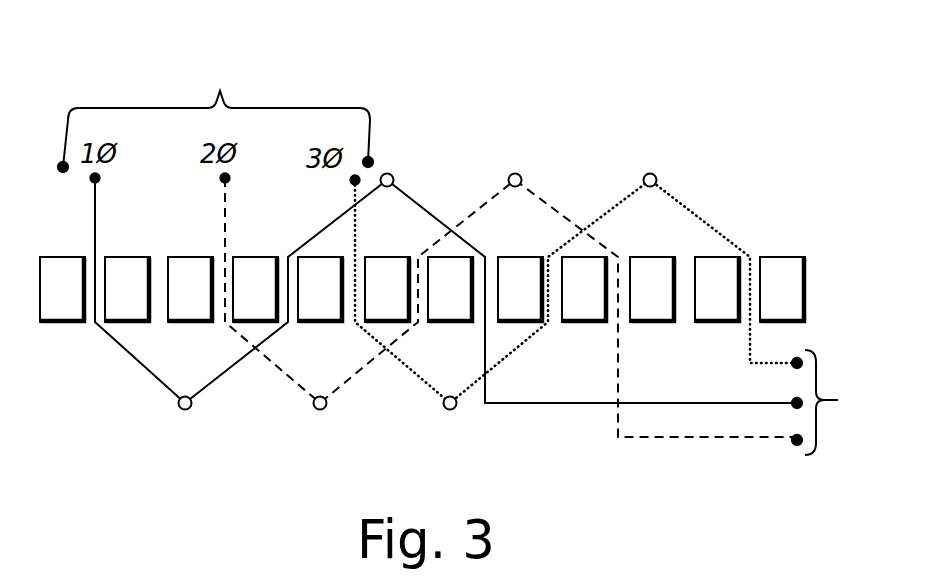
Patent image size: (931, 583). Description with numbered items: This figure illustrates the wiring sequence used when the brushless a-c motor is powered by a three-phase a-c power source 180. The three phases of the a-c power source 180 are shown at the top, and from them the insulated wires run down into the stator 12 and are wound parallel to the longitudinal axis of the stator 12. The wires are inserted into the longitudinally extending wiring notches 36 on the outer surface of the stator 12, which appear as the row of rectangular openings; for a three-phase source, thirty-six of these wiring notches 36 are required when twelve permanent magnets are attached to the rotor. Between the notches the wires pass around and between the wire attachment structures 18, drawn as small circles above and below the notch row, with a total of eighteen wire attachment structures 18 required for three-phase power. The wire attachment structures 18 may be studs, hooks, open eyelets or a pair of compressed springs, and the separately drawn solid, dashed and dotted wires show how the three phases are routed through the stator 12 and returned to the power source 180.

The three-phase a-c power source 180 is at (216, 107).
The wire attachment structures 18 is at (518, 175).
The wiring notches 36 is at (90, 327).
The stator 12 is at (839, 402).